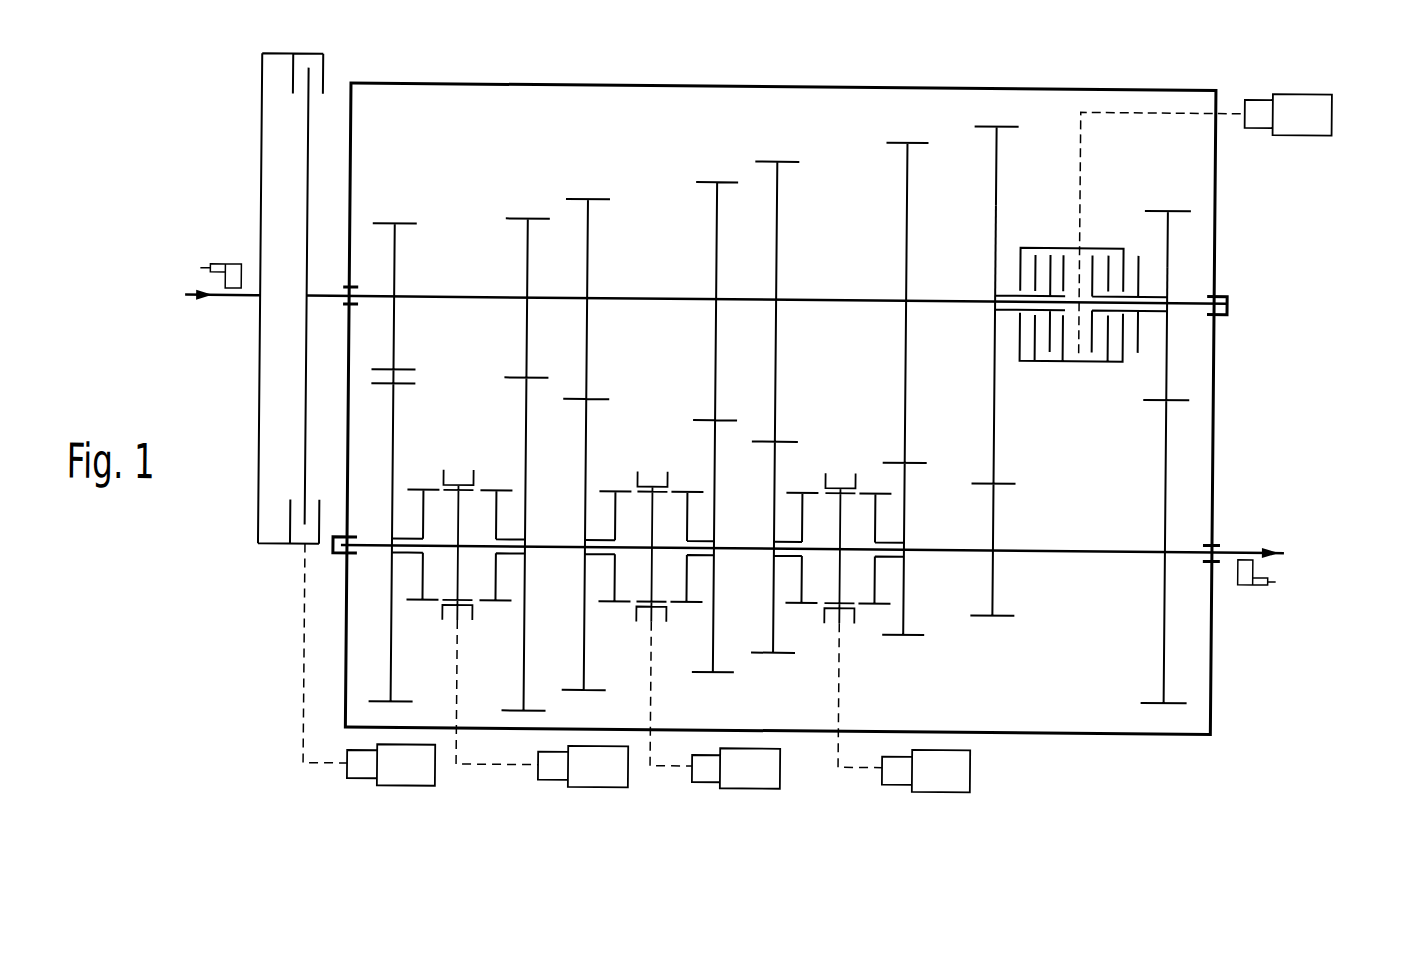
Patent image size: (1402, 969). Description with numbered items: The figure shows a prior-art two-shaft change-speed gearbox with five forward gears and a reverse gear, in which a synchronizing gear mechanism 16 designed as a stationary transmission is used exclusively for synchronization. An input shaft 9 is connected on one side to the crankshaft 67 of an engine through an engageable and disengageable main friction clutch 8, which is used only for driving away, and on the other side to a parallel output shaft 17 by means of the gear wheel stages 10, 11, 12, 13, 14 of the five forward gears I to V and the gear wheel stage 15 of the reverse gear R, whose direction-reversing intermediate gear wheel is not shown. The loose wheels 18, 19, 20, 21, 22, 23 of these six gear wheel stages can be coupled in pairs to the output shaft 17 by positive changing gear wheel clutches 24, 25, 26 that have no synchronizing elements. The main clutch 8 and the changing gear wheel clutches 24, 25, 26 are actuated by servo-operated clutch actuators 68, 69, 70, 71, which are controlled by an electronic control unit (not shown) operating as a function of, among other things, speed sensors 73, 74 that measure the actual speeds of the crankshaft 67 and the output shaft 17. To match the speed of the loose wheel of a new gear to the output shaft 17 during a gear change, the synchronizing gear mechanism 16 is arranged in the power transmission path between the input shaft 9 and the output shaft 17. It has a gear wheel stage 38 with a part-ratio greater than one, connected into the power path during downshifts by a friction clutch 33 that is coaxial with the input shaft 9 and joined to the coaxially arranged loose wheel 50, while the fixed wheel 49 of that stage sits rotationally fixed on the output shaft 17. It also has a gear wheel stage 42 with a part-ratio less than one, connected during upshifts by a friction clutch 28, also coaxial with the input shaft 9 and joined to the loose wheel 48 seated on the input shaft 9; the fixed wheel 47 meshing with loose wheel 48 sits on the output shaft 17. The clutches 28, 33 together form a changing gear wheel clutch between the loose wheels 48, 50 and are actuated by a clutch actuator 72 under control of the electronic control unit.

The main friction clutch 8 is at (277, 548).
The input shaft 9 is at (449, 289).
The gear wheel stage 10 is at (512, 212).
The gear wheel stage 11 is at (607, 188).
The gear wheel stage 12 is at (697, 170).
The gear wheel stage 13 is at (790, 153).
The gear wheel stage 14 is at (921, 130).
The gear wheel stage 15 is at (410, 214).
The synchronizing gear mechanism 16 is at (1122, 133).
The output shaft 17 is at (1239, 537).
The loose wheel 18 is at (528, 640).
The loose wheel 19 is at (588, 651).
The loose wheel 20 is at (717, 629).
The loose wheel 21 is at (782, 634).
The loose wheel 22 is at (910, 597).
The loose wheel 23 is at (397, 654).
The changing gear wheel clutch 24 is at (464, 469).
The changing gear wheel clutch 25 is at (656, 467).
The changing gear wheel clutch 26 is at (842, 466).
The friction clutch 28 is at (1043, 350).
The friction clutch 33 is at (1101, 248).
The gear wheel stage 38 is at (1161, 193).
The gear wheel stage 42 is at (997, 112).
The fixed wheel 47 is at (998, 569).
The loose wheel 48 is at (998, 166).
The fixed wheel 49 is at (1168, 615).
The loose wheel 50 is at (1172, 249).
The crankshaft 67 is at (224, 303).
The clutch actuator 68 is at (414, 786).
The clutch actuator 69 is at (589, 788).
The clutch actuator 70 is at (740, 789).
The clutch actuator 71 is at (927, 790).
The clutch actuator 72 is at (1336, 110).
The speed sensor 73 is at (228, 259).
The speed sensor 74 is at (1254, 582).